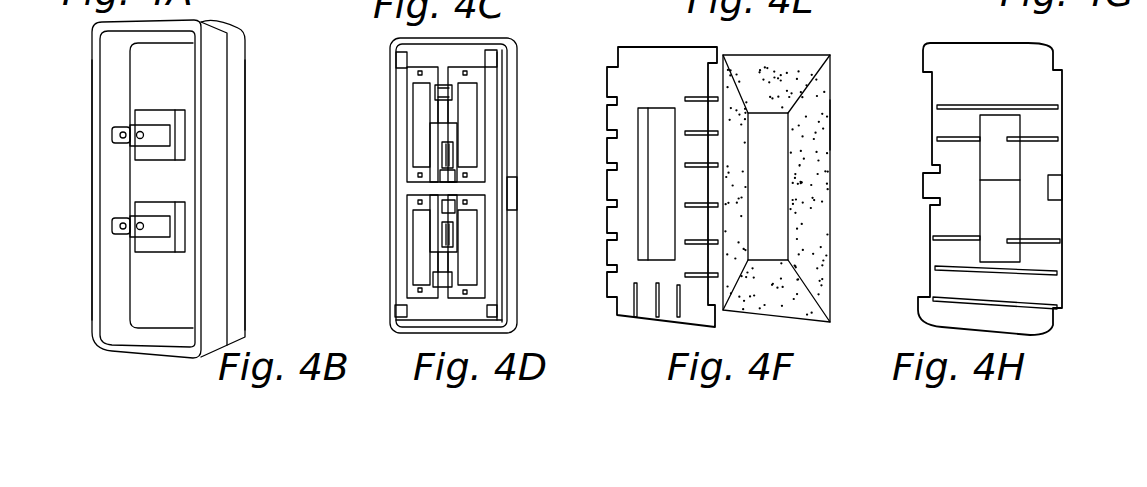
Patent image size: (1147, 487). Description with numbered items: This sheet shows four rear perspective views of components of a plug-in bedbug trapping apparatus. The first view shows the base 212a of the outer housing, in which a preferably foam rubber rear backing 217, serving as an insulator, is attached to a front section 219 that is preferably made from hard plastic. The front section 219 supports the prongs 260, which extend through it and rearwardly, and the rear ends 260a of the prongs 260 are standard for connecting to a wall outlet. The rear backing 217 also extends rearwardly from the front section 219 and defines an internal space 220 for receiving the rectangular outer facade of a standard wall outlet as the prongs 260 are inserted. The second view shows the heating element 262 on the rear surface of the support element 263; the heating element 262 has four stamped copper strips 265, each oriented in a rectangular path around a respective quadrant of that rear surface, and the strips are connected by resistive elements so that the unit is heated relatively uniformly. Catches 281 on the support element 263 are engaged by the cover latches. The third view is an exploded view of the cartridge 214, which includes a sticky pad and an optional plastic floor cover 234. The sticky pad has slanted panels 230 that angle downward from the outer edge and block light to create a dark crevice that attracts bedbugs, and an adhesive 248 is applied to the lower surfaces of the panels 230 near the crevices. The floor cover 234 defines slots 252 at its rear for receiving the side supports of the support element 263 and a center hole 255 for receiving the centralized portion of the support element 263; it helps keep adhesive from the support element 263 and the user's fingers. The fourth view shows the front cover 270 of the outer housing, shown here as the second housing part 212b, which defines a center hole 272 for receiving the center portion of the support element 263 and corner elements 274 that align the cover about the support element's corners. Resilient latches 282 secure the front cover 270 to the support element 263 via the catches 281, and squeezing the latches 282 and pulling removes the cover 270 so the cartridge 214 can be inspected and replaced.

In FIG. 4B, the base 212a is at (213, 43).
In FIG. 4H, the second housing portion 212b is at (1013, 60).
In FIG. 4B, the rear backing 217 is at (97, 100).
In FIG. 4B, the front section 219 is at (247, 117).
In FIG. 4B, the internal space 220 is at (158, 283).
In FIG. 4B, the prongs 260 is at (113, 226).
In FIG. 4B, the rear ends of the prongs 260a is at (157, 138).
In FIG. 4D, the heating element 262 is at (482, 108).
In FIG. 4D, the support element 263 is at (507, 53).
In FIG. 4D, the copper strips 265 is at (408, 122).
In FIG. 4D, the catches 281 is at (515, 183).
In FIG. 4F, the cartridge 214 is at (697, 31).
In FIG. 4F, the panels 230 is at (760, 63).
In FIG. 4F, the adhesive 248 is at (810, 143).
In FIG. 4F, the slots 252 is at (607, 100).
In FIG. 4F, the center hole 255 is at (658, 137).
In FIG. 4F, the floor cover 234 is at (627, 303).
In FIG. 4H, the front cover 270 is at (1042, 125).
In FIG. 4H, the center hole 272 is at (995, 205).
In FIG. 4H, the corner elements 274 is at (1055, 323).
In FIG. 4H, the latches 282 is at (1062, 185).